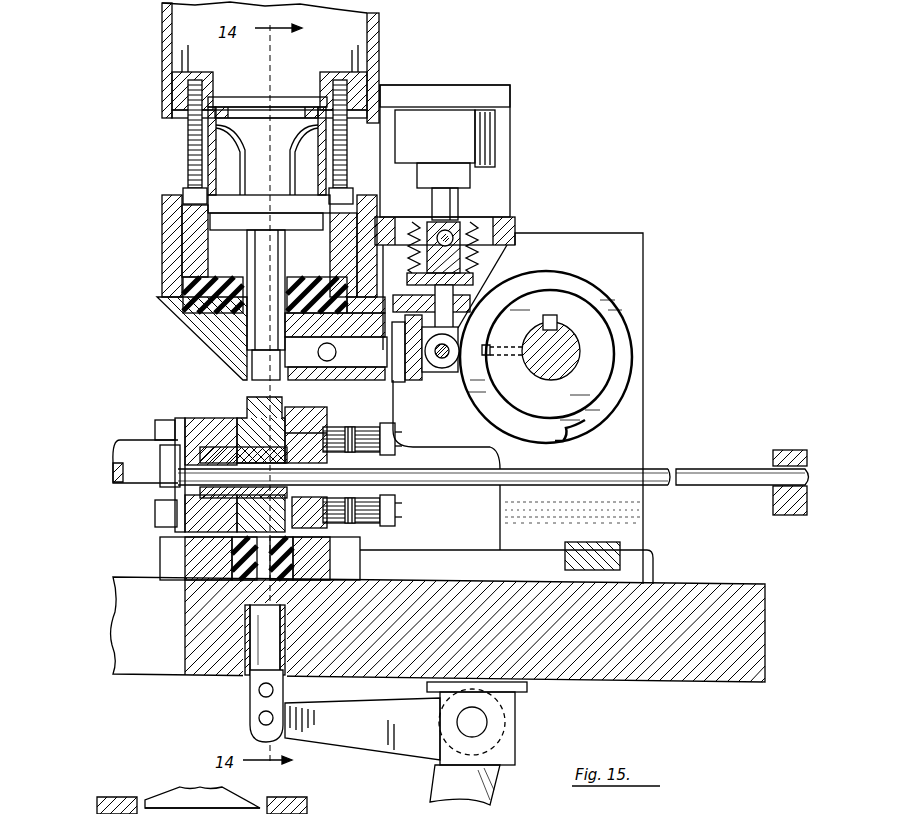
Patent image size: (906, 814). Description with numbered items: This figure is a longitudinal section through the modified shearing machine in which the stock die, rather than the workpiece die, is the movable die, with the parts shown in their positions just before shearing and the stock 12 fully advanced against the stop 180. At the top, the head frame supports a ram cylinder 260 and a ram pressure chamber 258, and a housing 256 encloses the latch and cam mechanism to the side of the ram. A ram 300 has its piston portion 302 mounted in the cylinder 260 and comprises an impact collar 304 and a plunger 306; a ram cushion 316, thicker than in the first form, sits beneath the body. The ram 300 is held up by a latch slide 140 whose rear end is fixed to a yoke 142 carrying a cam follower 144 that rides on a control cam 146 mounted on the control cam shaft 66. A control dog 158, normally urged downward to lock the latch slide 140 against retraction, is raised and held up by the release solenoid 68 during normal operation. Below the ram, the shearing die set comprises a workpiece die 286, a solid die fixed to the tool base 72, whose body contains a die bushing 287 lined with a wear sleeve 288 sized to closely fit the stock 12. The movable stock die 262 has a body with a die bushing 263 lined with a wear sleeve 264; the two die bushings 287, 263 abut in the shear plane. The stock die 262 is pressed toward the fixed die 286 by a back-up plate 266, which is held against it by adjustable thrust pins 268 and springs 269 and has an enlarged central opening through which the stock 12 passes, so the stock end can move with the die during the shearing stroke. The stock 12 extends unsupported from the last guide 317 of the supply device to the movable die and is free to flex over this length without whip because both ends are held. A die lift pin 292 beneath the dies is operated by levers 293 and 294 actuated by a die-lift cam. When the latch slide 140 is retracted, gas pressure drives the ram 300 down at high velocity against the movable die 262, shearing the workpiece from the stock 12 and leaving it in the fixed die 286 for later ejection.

The stock 12 is at (715, 469).
The control cam shaft 66 is at (545, 370).
The release solenoid 68 is at (442, 134).
The tool base 72 is at (345, 555).
The latch slide 140 is at (398, 382).
The yoke 142 is at (440, 372).
The cam follower 144 is at (450, 365).
The control cam 146 is at (625, 392).
The control dog 158 is at (462, 286).
The stop 180 is at (132, 458).
The housing frame 256 is at (630, 300).
The ram pressure chamber 258 is at (379, 40).
The ram cylinder 260 is at (212, 150).
The stock die 262 is at (262, 412).
The die bushing 263 is at (242, 503).
The wear sleeve 264 is at (328, 390).
The back-up plate 266 is at (350, 488).
The adjustable thrust pins 268 is at (388, 455).
The springs 269 is at (350, 432).
The workpiece die 286 is at (200, 430).
The die bushing 287 is at (205, 490).
The wear sleeve 288 is at (205, 452).
The die lift pin 292 is at (265, 595).
The lever 293 is at (364, 730).
The lever 294 is at (493, 793).
The ram 300 is at (278, 168).
The piston portion 302 is at (268, 103).
The impact collar 304 is at (290, 222).
The plunger 306 is at (280, 290).
The ram cushion 316 is at (228, 295).
The last guide 317 is at (790, 450).